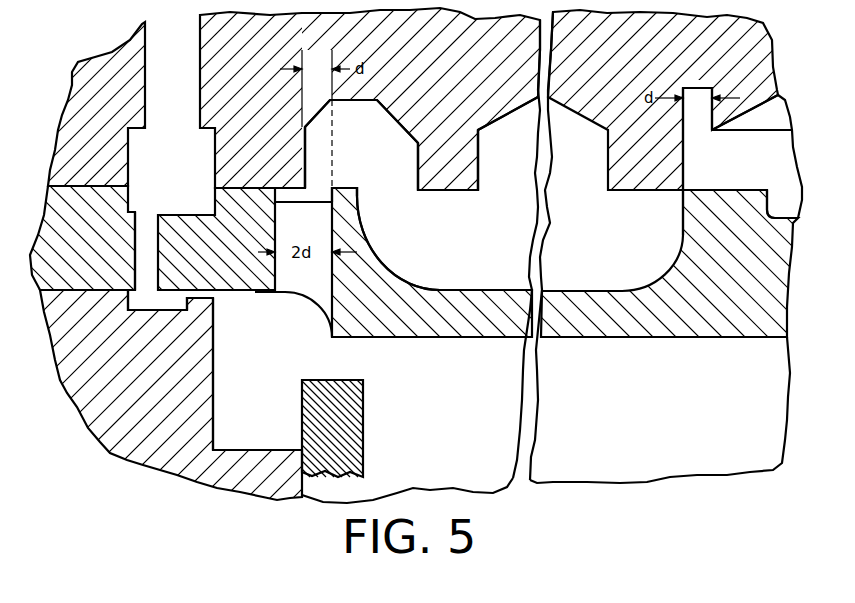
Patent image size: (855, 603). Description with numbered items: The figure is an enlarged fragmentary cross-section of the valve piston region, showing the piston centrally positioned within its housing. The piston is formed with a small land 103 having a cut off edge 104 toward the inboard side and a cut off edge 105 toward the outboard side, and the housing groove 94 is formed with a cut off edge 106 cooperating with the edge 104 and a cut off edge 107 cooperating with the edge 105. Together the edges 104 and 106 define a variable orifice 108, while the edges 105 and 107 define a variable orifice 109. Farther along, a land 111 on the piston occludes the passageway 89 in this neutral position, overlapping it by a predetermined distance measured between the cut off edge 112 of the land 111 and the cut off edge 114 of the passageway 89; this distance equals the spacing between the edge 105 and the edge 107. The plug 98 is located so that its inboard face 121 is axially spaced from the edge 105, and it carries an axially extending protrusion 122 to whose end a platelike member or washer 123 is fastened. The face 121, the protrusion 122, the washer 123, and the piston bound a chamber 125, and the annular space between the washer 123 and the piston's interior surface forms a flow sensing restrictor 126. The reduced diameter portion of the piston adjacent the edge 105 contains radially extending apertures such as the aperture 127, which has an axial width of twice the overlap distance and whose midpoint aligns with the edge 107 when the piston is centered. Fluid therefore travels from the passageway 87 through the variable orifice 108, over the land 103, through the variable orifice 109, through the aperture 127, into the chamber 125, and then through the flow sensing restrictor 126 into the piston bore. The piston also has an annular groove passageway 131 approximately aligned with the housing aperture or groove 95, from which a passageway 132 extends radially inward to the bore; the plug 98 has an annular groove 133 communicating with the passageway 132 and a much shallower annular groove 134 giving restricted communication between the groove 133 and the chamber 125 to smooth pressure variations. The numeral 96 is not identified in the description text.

The passageway 87 is at (516, 179).
The passageway 89 is at (784, 154).
The groove 94 is at (392, 115).
The aperture or groove 95 is at (128, 132).
The housing 96 is at (202, 42).
The plug 98 is at (150, 432).
The land 103 is at (345, 186).
The cut off edge 104 is at (377, 228).
The cut off edge 105 is at (332, 190).
The cut off edge 106 is at (423, 160).
The cut off edge 107 is at (305, 173).
The variable orifice 108 is at (393, 190).
The variable orifice 109 is at (303, 219).
The land 111 is at (740, 262).
The cut off edge 112 is at (683, 223).
The cut off edge 114 is at (708, 169).
The inboard face 121 is at (217, 404).
The axially extending protrusion 122 is at (260, 449).
The platelike member or washer 123 is at (362, 420).
The chamber 125 is at (266, 374).
The flow sensing restrictor 126 is at (367, 362).
The aperture 127 is at (316, 291).
The passageway 131 is at (128, 207).
The passageway 132 is at (135, 262).
The annular groove 133 is at (128, 306).
The shallower annular groove 134 is at (190, 325).